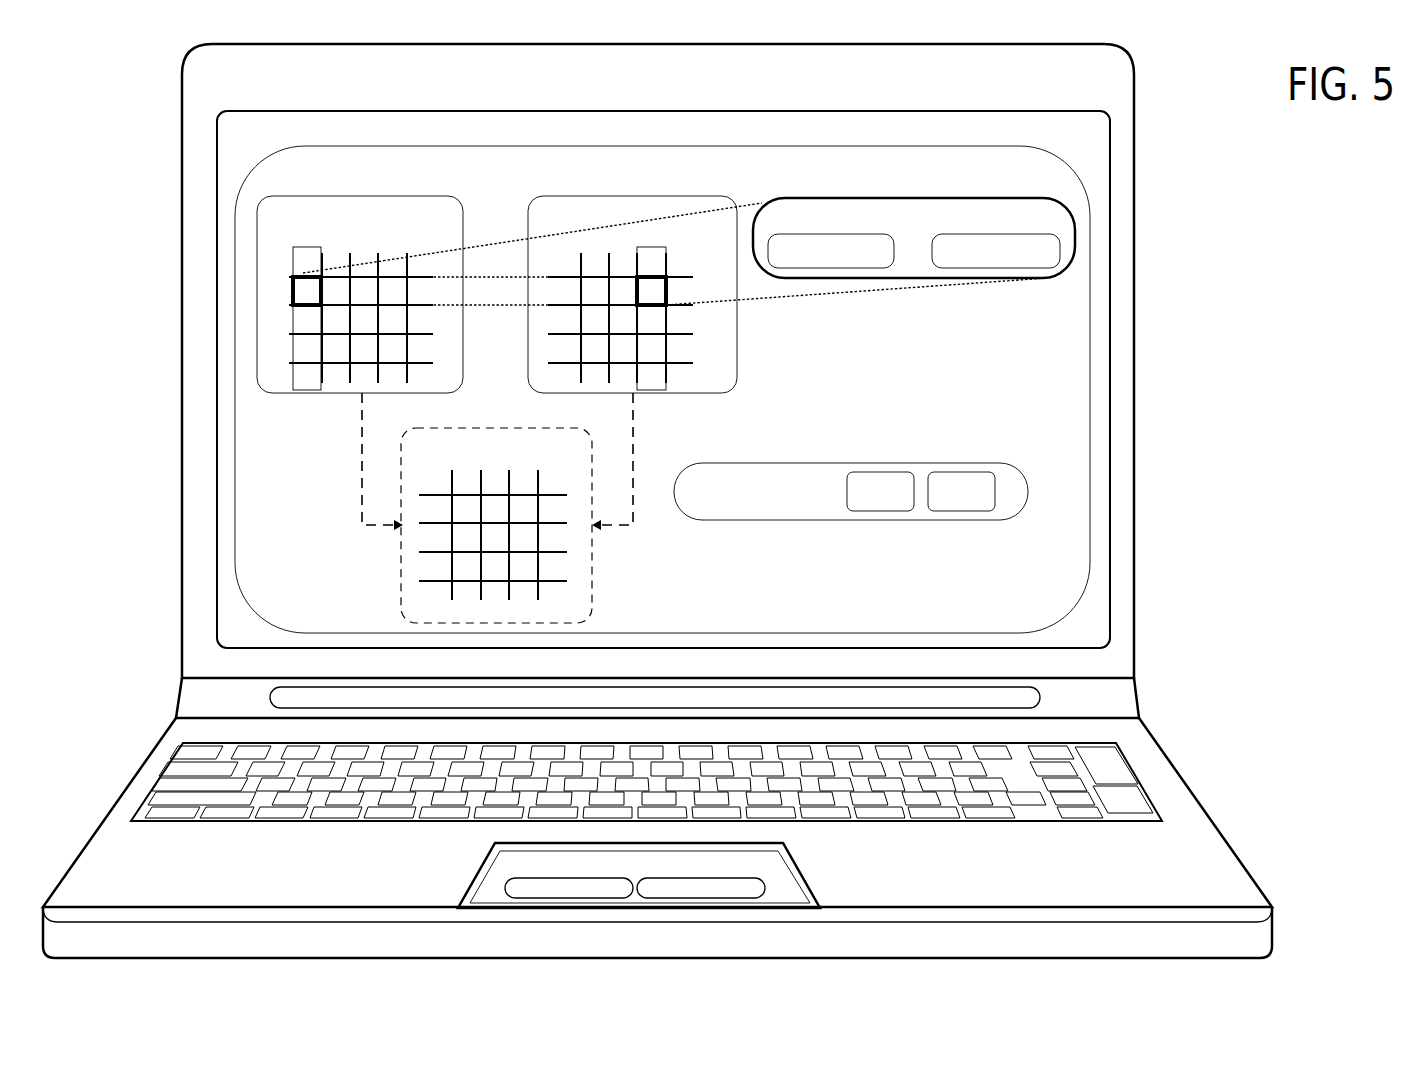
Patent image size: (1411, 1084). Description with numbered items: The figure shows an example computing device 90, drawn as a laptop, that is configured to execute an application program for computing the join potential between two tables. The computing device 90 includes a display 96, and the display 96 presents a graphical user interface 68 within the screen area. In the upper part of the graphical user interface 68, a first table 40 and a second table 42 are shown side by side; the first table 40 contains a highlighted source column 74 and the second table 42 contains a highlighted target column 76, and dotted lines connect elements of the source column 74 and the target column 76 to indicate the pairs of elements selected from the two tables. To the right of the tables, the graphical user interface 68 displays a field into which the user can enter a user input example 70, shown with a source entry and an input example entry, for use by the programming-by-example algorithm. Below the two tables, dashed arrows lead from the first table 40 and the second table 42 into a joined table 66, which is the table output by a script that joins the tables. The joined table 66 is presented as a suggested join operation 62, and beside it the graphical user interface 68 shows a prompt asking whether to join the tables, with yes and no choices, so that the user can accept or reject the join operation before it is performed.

The computing device 90 is at (1087, 98).
The display 96 is at (975, 143).
The graphical user interface 68 is at (993, 621).
The first table 40 is at (438, 193).
The second table 42 is at (722, 193).
The source column 74 is at (462, 238).
The target column 76 is at (732, 238).
The user input example 70 is at (1032, 193).
The joined table 66 is at (581, 421).
The suggested join operation 62 is at (1012, 455).